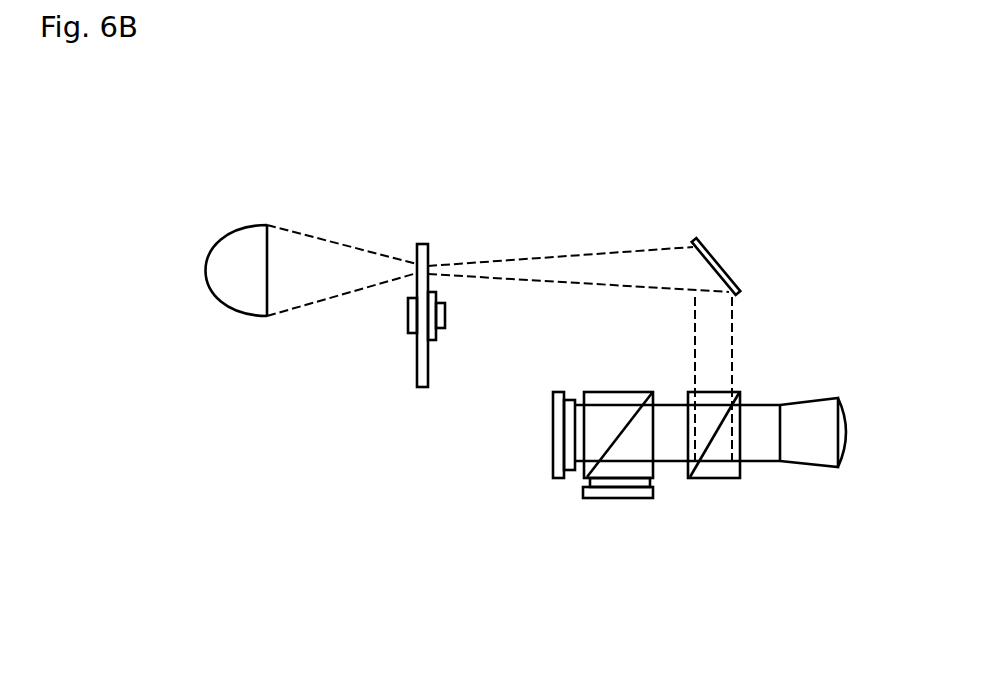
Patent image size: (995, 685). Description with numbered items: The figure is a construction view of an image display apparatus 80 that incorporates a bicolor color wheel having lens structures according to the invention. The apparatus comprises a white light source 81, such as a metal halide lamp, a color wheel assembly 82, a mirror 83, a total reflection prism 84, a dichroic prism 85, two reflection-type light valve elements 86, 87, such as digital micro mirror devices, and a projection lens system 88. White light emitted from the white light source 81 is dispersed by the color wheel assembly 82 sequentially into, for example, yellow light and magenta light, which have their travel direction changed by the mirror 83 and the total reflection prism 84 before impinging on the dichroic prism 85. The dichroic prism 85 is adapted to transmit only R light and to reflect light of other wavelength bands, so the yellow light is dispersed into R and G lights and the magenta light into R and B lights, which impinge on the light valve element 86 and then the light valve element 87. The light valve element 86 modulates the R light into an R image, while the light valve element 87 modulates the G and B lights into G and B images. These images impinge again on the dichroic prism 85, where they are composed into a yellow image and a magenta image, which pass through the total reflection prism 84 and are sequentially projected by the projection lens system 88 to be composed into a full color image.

The image display apparatus 80 is at (493, 537).
The white light source 81 is at (237, 283).
The color wheel assembly 82 is at (423, 387).
The mirror 83 is at (718, 267).
The total reflection prism 84 is at (715, 470).
The dichroic prism 85 is at (607, 403).
The light valve element 86 is at (560, 418).
The light valve element 87 is at (623, 498).
The projection lens system 88 is at (807, 412).